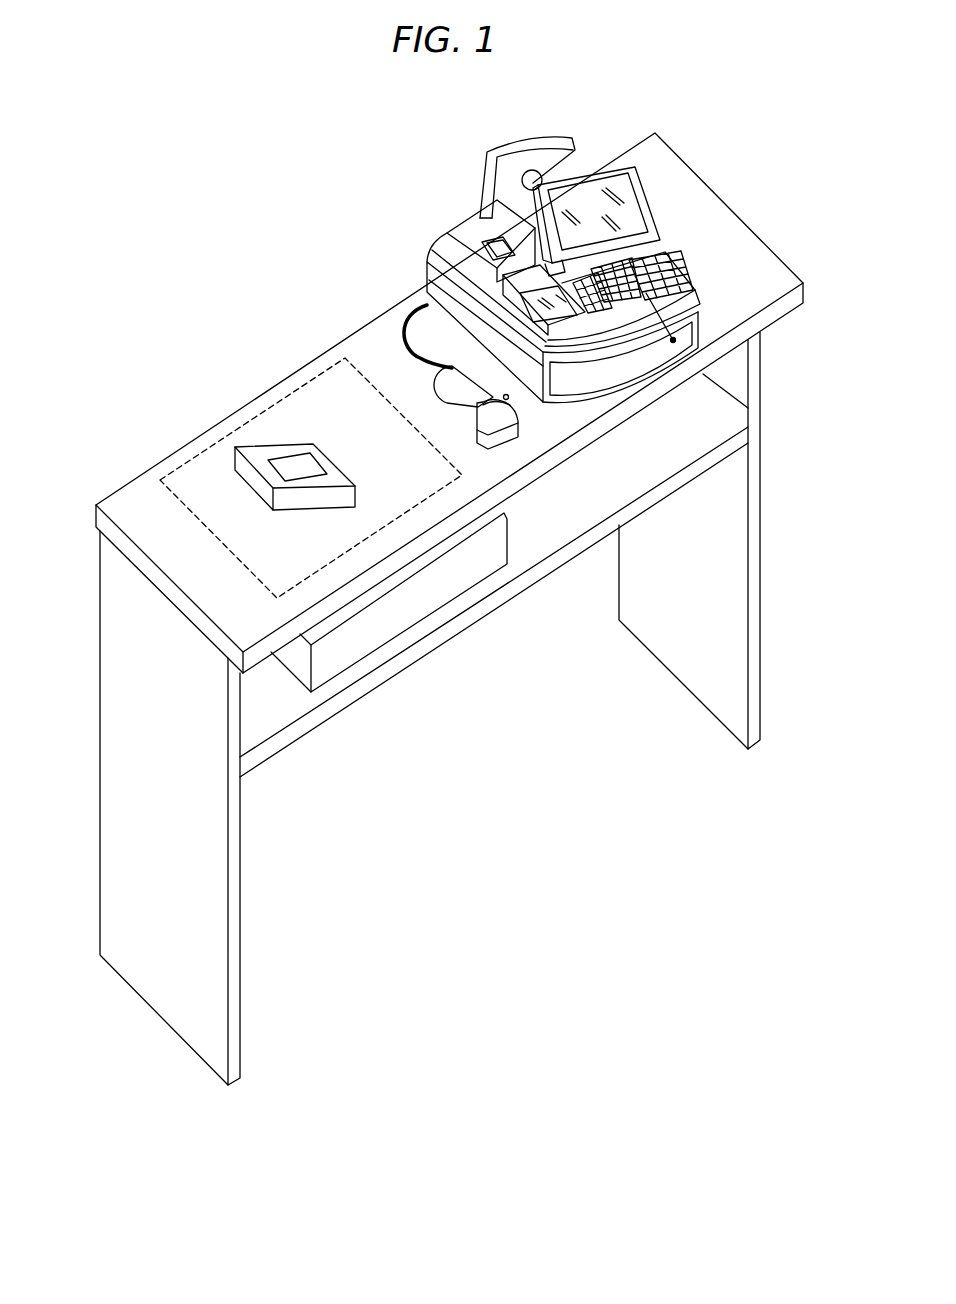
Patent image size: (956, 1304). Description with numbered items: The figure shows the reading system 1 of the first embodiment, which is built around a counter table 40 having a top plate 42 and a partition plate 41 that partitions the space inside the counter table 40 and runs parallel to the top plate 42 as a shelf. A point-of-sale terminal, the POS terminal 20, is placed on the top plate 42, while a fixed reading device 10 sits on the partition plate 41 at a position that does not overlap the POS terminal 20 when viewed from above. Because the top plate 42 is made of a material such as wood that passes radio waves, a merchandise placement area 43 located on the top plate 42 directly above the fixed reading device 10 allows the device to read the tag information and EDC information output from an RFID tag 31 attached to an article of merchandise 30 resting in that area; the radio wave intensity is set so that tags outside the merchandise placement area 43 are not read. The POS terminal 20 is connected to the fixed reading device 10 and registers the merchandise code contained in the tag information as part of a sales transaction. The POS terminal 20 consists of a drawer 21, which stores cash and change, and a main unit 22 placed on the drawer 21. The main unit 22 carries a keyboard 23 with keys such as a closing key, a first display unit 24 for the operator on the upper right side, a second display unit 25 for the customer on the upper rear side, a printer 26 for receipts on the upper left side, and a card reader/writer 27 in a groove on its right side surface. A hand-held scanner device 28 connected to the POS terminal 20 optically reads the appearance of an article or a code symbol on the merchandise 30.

The reading system 1 is at (205, 210).
The fixed reading device 10 is at (465, 568).
The POS terminal 20 is at (585, 131).
The drawer 21 is at (455, 300).
The main unit 22 is at (426, 252).
The keyboard 23 is at (673, 341).
The first display unit 24 is at (625, 190).
The second display unit 25 is at (482, 168).
The printer 26 is at (486, 247).
The card reader/writer 27 is at (697, 293).
The scanner device 28 is at (434, 394).
The merchandise 30 is at (260, 453).
The RFID tag 31 is at (297, 468).
The counter table 40 is at (112, 480).
The partition plate 41 is at (315, 713).
The top plate 42 is at (175, 553).
The merchandise placement area 43 is at (313, 370).